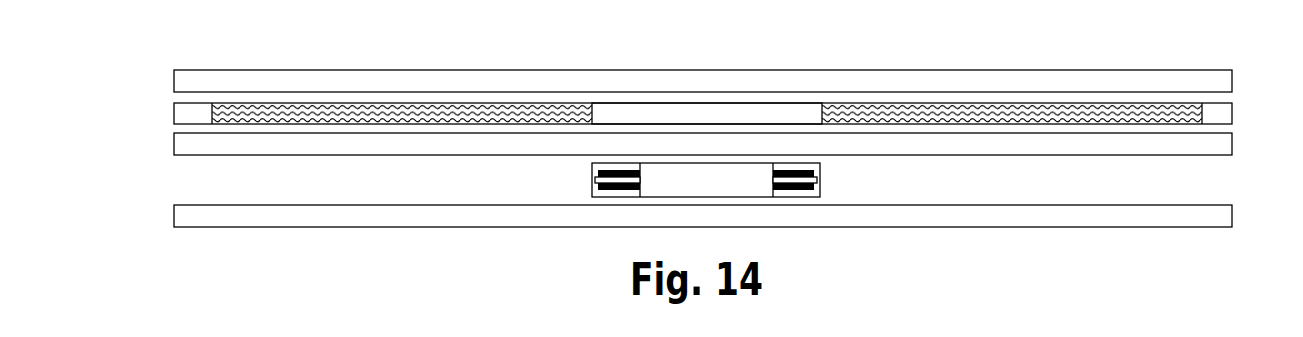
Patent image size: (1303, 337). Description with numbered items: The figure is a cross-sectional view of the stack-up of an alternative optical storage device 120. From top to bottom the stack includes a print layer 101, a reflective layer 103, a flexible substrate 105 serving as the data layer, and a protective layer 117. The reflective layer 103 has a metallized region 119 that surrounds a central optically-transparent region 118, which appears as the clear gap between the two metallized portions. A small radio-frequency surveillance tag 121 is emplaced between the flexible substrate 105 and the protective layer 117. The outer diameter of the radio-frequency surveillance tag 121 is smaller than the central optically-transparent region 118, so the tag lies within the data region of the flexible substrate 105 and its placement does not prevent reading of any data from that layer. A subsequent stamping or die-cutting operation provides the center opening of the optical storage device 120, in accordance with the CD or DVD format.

The print layer 101 is at (1233, 82).
The reflective layer 103 is at (1233, 108).
The flexible substrate 105 is at (1233, 140).
The protective layer 117 is at (1233, 211).
The central optically-transparent region 118 is at (730, 107).
The metallized region 119 is at (990, 108).
The alternative optical storage device 120 is at (893, 270).
The radio-frequency surveillance tag 121 is at (820, 170).